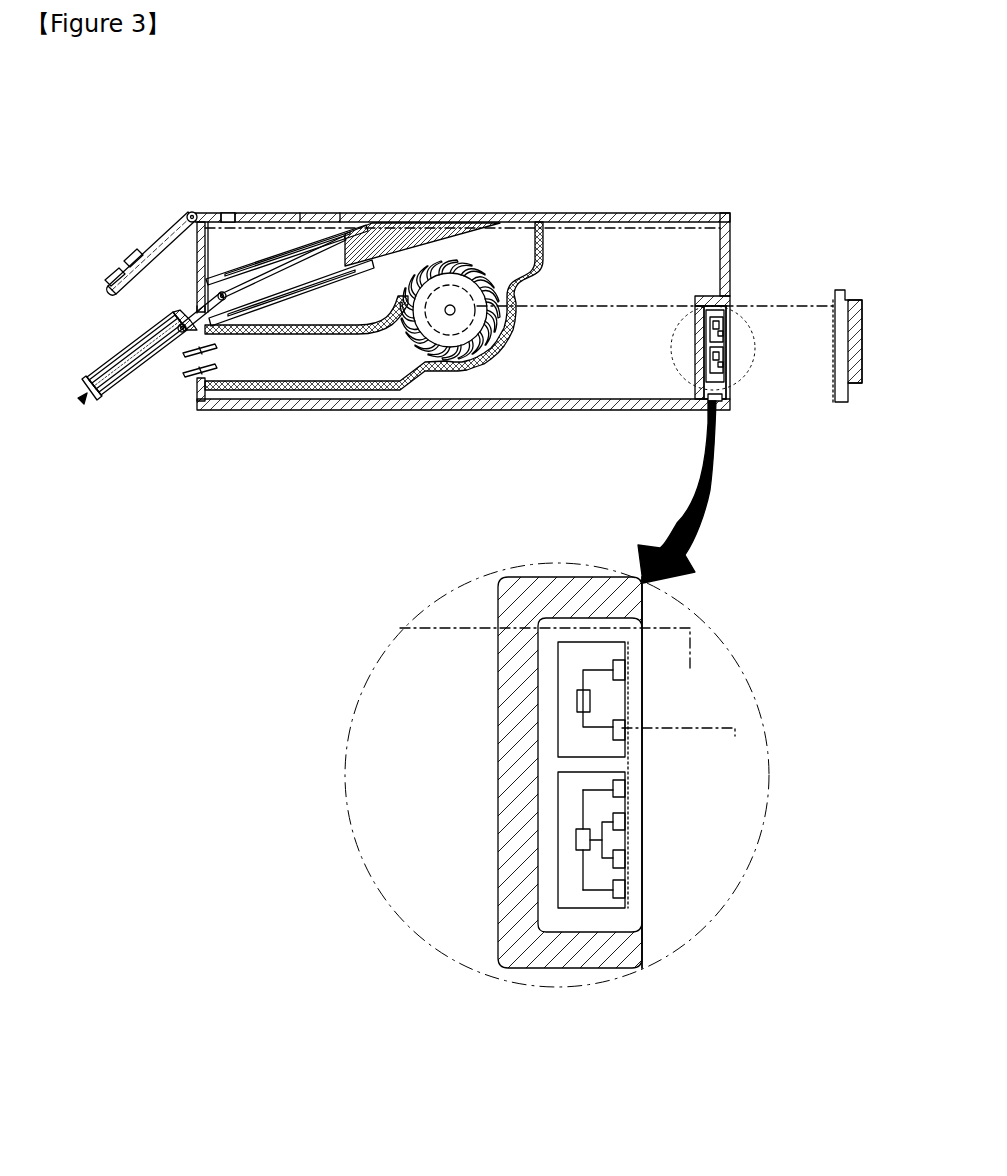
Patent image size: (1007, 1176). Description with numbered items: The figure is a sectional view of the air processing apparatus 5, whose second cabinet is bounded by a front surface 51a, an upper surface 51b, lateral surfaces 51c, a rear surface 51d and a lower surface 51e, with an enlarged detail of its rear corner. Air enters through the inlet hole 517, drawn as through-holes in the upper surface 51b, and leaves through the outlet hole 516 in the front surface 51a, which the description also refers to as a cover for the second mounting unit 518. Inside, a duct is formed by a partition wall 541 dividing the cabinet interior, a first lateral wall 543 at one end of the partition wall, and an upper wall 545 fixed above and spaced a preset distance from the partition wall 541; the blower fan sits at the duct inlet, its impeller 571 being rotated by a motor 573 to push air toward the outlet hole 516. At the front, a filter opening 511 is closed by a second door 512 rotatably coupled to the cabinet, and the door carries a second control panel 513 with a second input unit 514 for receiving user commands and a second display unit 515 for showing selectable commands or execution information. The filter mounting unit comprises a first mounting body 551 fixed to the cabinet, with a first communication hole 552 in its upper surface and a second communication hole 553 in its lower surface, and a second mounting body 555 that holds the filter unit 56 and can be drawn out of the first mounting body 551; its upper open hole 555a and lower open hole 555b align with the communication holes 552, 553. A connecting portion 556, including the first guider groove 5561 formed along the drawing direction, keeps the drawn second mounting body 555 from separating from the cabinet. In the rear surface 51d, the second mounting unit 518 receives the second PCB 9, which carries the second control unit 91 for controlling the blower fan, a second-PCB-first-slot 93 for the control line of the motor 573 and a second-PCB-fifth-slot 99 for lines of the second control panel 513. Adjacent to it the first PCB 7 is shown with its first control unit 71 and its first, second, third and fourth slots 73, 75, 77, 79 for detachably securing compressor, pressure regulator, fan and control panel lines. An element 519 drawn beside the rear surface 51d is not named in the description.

The air processing apparatus 5 is at (100, 84).
The front surface 51a is at (203, 253).
The upper surface 51b is at (598, 216).
The lateral surfaces 51c is at (705, 262).
The rear surface 51d is at (723, 223).
The lower surface 51e is at (540, 410).
The filter opening 511 is at (203, 300).
The second door 512 is at (157, 243).
The second control panel 513 is at (123, 270).
The second input unit 514 is at (112, 272).
The second display unit 515 is at (132, 252).
The outlet hole 516 is at (208, 355).
The inlet hole 517 is at (230, 216).
The second mounting unit 518 is at (705, 352).
The clip 519 is at (853, 297).
The partition wall 541 is at (352, 385).
The first lateral wall 543 is at (313, 357).
The upper wall 545 is at (270, 334).
The first mounting body 551 is at (408, 238).
The first communication hole 552 is at (298, 240).
The second communication hole 553 is at (336, 265).
The second mounting body 555 is at (100, 378).
The upper open hole 555a is at (163, 358).
The lower open hole 555b is at (130, 380).
The connecting portion 556 is at (176, 318).
The first guider groove 5561 is at (270, 283).
The filter unit 56 is at (84, 399).
The impeller 571 is at (427, 327).
The motor 573 is at (450, 327).
The first PCB 7 is at (712, 360).
The first control unit 71 is at (712, 367).
The first-PCB-first-slot 73 is at (723, 350).
The first-PCB-second-slot 75 is at (723, 358).
The first-PCB-third-slot 77 is at (723, 366).
The first-PCB-fourth-slot 79 is at (723, 374).
The second PCB 9 is at (712, 333).
The second control unit 91 is at (723, 328).
The second-PCB-first-slot 93 is at (723, 338).
The second-PCB-fifth-slot 99 is at (723, 318).